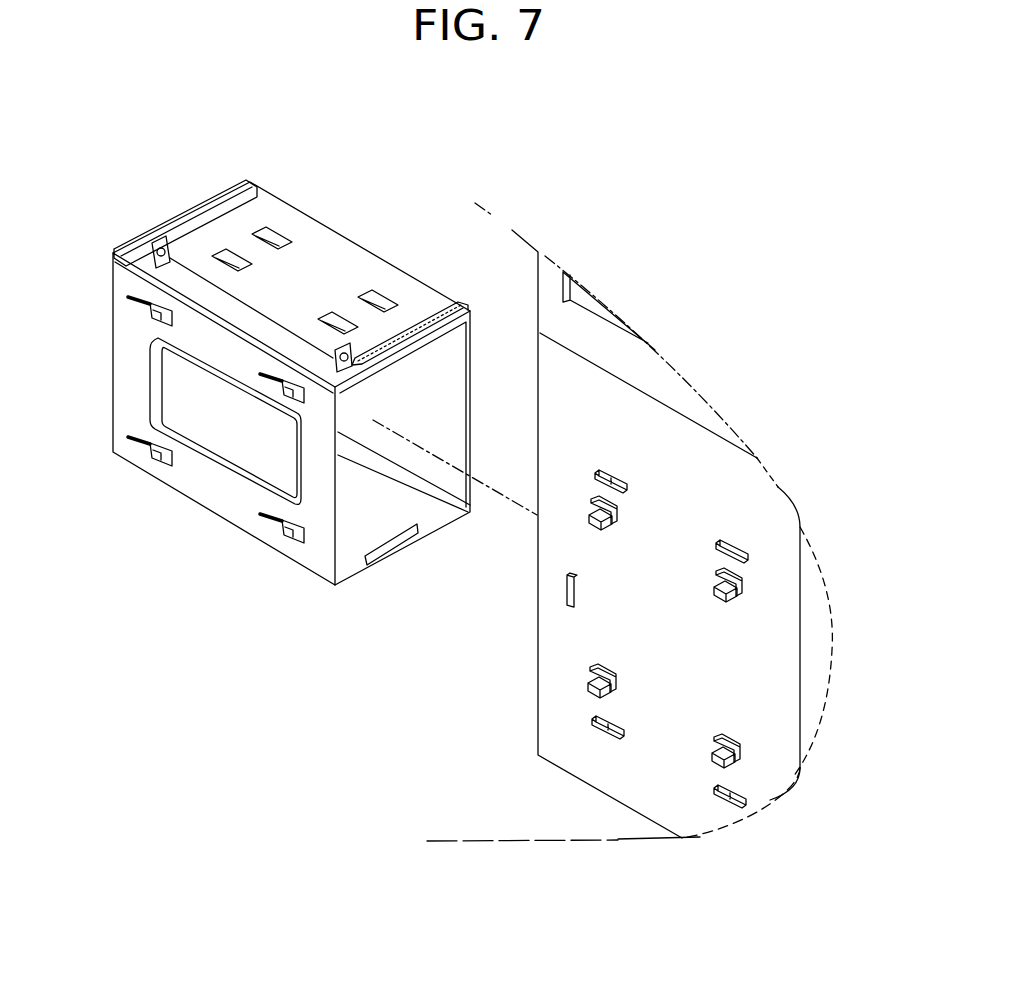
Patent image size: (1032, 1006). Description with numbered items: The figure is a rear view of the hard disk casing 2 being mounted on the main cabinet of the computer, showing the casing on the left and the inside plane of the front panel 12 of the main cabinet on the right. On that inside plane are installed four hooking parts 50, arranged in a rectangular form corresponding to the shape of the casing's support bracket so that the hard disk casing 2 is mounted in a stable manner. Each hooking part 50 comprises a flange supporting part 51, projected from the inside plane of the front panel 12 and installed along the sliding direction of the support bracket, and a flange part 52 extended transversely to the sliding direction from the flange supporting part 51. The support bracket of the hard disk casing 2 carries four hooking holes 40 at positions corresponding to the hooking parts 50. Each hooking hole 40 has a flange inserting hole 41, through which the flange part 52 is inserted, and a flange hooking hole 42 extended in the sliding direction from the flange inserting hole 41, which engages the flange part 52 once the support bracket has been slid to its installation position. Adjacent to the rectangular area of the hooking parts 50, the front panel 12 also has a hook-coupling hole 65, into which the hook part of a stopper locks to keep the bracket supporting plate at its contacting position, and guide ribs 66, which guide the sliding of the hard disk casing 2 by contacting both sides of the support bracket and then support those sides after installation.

The hard disk casing 2 is at (203, 192).
The front panel 12 is at (583, 647).
The hooking hole 40 is at (385, 226).
The flange inserting hole 41 is at (303, 396).
The flange hooking hole 42 is at (268, 374).
The hooking part 50 is at (673, 537).
The flange supporting part 51 is at (597, 532).
The flange part 52 is at (620, 513).
The hook-coupling hole 65 is at (566, 590).
The guide rib 66 is at (731, 540).